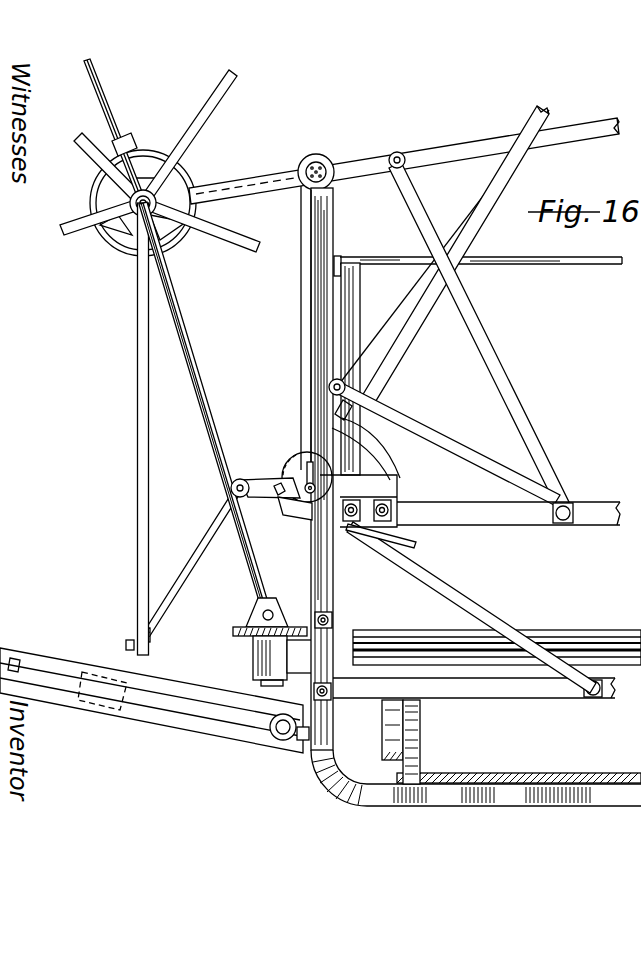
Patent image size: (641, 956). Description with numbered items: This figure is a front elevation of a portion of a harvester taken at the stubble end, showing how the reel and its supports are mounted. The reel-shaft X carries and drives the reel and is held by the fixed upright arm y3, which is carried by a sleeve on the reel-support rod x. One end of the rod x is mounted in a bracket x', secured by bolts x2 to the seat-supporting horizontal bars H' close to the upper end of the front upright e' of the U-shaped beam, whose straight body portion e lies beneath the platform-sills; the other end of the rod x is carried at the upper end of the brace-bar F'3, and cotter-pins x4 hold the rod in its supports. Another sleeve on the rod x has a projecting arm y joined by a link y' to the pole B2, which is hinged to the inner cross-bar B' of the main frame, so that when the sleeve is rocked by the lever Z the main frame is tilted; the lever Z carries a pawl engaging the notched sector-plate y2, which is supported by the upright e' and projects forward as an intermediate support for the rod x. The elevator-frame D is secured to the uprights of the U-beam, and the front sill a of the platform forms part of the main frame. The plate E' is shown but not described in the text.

The reel-shaft X is at (122, 238).
The fixed upright arm y3 is at (300, 352).
The elevator-frame D is at (352, 325).
The lever Z is at (405, 344).
The notched plate or sector y2 is at (385, 414).
The cotter-pins x4 is at (306, 470).
The projecting arm y is at (265, 473).
The bracket x' is at (339, 489).
The rod x is at (291, 516).
The bolts x2 is at (410, 545).
The horizontal bars H' is at (508, 531).
The link y' is at (184, 567).
The front upright e' is at (342, 469).
The brace-bar F'3 is at (471, 607).
The pole B2 is at (58, 665).
The inner cross-bar B' is at (474, 704).
The front sill a is at (421, 748).
The straight body portion e is at (476, 797).
The plate E' is at (519, 809).